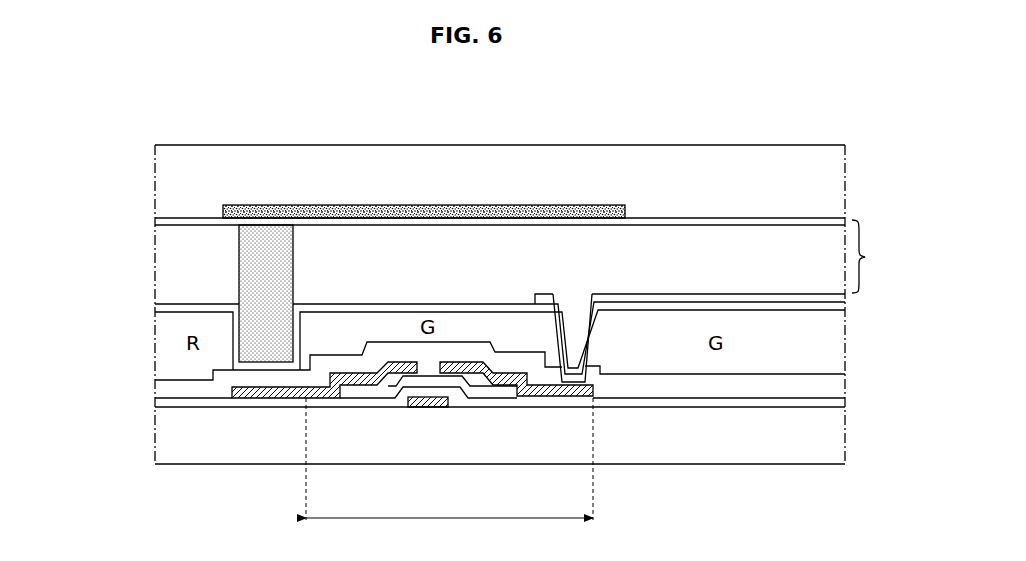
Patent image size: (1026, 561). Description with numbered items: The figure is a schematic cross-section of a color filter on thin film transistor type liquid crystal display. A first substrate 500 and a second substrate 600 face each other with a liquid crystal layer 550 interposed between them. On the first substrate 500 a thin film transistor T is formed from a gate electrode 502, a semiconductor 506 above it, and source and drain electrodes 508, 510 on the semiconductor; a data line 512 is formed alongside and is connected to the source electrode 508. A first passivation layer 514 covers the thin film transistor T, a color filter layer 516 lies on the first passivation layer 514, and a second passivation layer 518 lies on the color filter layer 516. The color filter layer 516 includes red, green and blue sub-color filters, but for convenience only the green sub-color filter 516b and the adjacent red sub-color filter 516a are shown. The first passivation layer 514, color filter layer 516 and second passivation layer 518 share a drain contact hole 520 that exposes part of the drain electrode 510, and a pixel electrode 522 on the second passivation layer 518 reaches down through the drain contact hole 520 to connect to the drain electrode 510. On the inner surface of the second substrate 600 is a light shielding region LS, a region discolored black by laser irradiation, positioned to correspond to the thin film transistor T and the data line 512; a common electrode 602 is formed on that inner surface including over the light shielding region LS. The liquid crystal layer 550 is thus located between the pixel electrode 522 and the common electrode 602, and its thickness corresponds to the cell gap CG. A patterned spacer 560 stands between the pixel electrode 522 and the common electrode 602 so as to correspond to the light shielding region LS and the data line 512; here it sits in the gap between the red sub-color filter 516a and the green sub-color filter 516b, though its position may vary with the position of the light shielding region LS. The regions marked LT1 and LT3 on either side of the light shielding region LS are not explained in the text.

The first substrate 500 is at (830, 444).
The gate electrode 502 is at (420, 408).
The semiconductor 506 is at (367, 388).
The source electrode 508 is at (396, 362).
The drain electrode 510 is at (461, 362).
The data line 512 is at (251, 392).
The first passivation layer 514 is at (198, 388).
The color filter layer 516 is at (432, 338).
The red sub-color filter 516a is at (167, 322).
The green sub-color filter 516b is at (317, 343).
The second passivation layer 518 is at (503, 303).
The drain contact hole 520 is at (572, 296).
The pixel electrode 522 is at (668, 293).
The liquid crystal layer 550 is at (880, 256).
The patterned spacer 560 is at (290, 282).
The second substrate 600 is at (830, 179).
The common electrode 602 is at (752, 222).
The light shielding region LS is at (430, 194).
The first light transmission region LT1 is at (700, 194).
The third light transmission region LT3 is at (192, 194).
The cell gap CG is at (193, 234).
The thin film transistor T is at (449, 459).